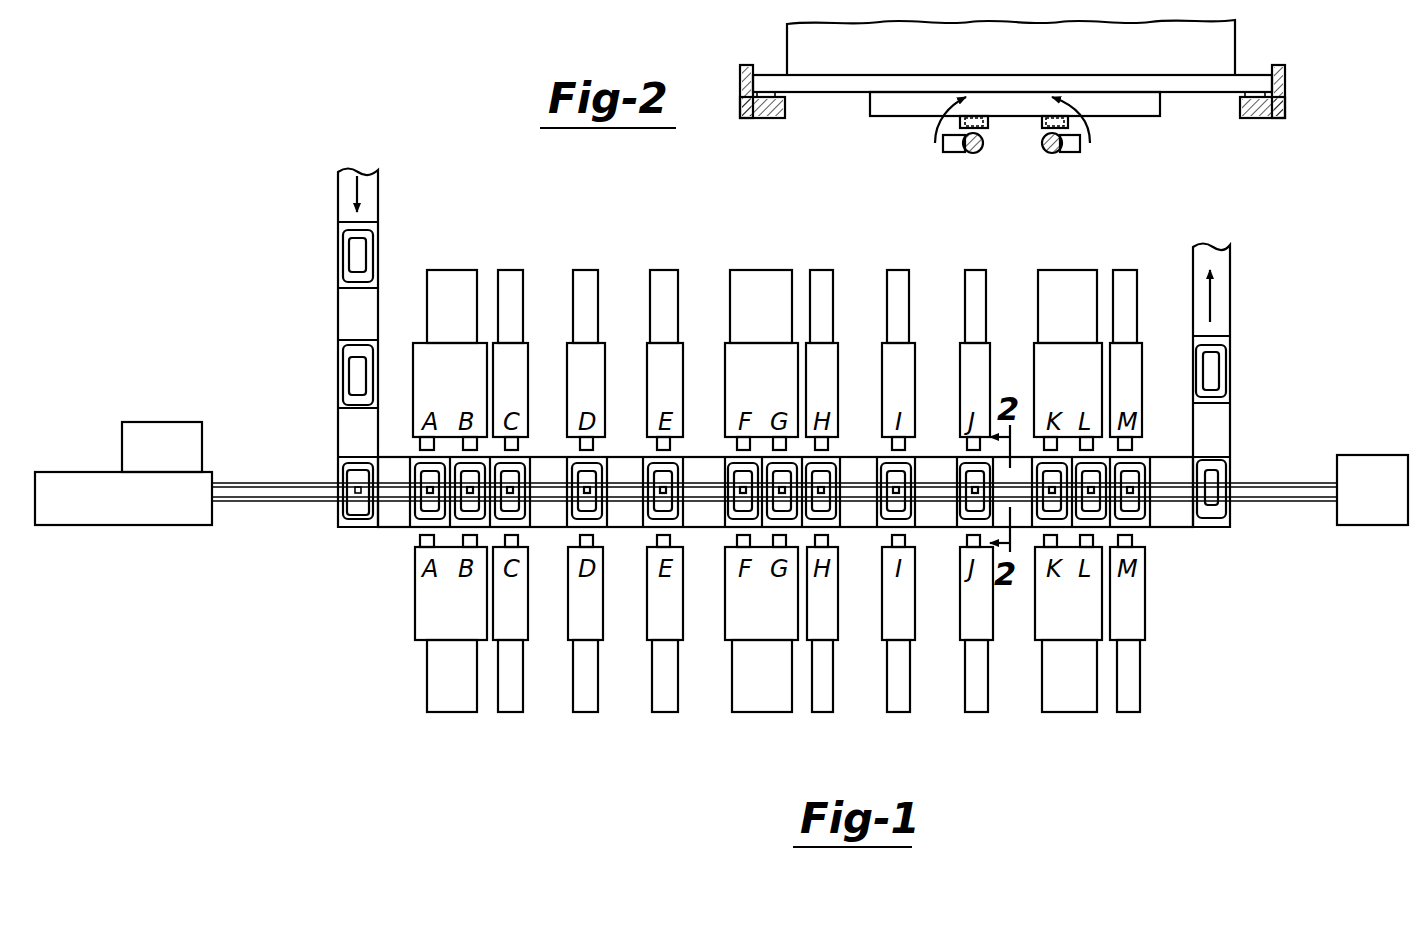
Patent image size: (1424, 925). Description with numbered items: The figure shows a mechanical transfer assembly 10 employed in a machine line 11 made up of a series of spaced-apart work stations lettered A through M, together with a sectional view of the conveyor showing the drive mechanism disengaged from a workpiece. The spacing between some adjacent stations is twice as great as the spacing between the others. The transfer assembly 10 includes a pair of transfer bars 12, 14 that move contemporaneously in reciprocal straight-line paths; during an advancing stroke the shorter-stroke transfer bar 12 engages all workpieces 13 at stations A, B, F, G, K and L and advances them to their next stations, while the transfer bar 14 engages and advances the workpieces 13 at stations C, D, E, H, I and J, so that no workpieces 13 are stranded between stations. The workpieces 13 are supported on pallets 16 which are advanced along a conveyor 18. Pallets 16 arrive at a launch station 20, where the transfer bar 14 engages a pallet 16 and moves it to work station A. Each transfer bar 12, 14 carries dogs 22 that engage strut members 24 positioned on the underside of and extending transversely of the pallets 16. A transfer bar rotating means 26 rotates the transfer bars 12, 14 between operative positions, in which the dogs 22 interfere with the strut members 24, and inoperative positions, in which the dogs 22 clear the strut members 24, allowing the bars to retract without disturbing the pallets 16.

In FIG. 1, the mechanical transfer assembly 10 is at (130, 540).
In FIG. 1, the machine line 11 is at (312, 545).
In FIG. 2, the transfer bar 12 is at (972, 154).
In FIG. 1, the transfer bar 12 is at (283, 503).
In FIG. 2, the workpieces 13 is at (787, 40).
In FIG. 1, the workpieces 13 is at (679, 468).
In FIG. 2, the transfer bar 14 is at (1050, 154).
In FIG. 1, the transfer bar 14 is at (256, 483).
In FIG. 2, the pallets 16 is at (862, 90).
In FIG. 2, the conveyor 18 is at (746, 120).
In FIG. 1, the launch station 20 is at (352, 532).
In FIG. 2, the dogs 22 is at (946, 150).
In FIG. 2, the strut members 24 is at (989, 116).
In FIG. 1, the transfer bar rotating means 26 is at (1393, 408).